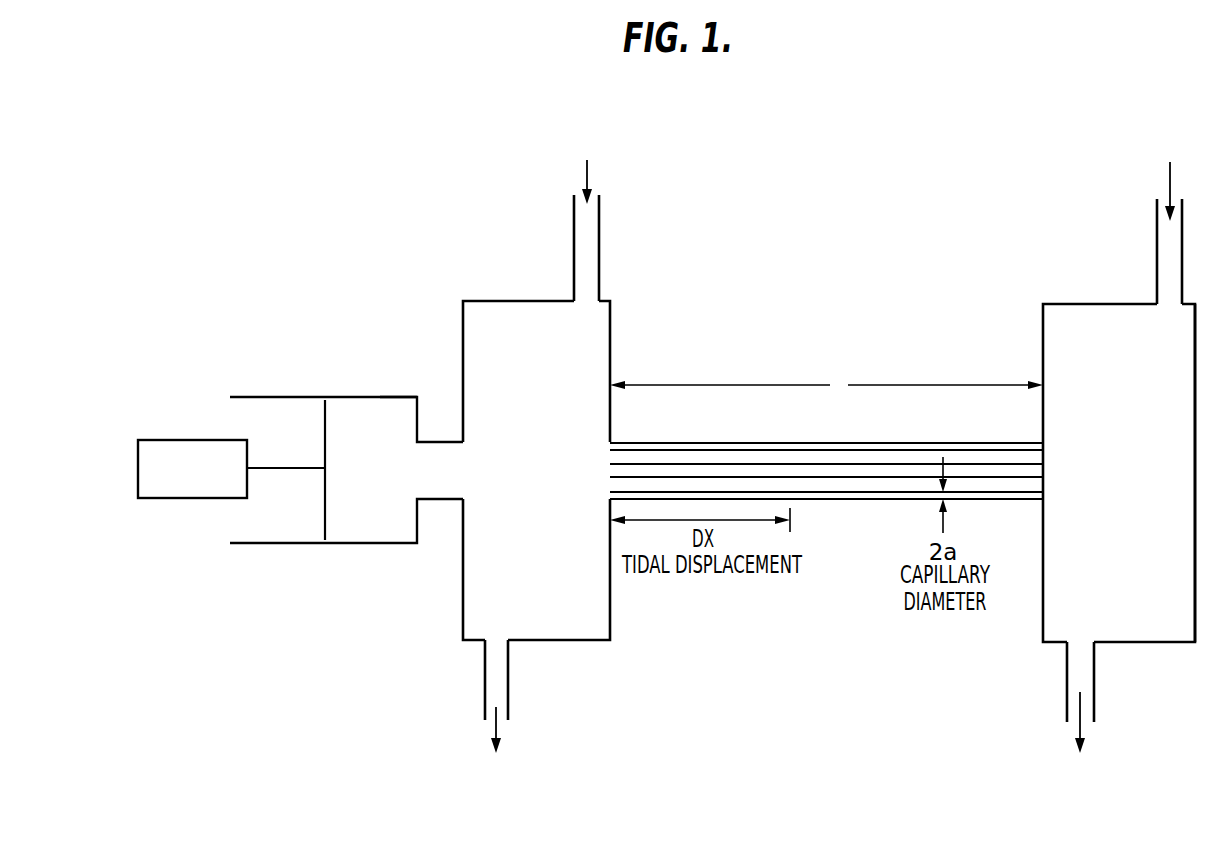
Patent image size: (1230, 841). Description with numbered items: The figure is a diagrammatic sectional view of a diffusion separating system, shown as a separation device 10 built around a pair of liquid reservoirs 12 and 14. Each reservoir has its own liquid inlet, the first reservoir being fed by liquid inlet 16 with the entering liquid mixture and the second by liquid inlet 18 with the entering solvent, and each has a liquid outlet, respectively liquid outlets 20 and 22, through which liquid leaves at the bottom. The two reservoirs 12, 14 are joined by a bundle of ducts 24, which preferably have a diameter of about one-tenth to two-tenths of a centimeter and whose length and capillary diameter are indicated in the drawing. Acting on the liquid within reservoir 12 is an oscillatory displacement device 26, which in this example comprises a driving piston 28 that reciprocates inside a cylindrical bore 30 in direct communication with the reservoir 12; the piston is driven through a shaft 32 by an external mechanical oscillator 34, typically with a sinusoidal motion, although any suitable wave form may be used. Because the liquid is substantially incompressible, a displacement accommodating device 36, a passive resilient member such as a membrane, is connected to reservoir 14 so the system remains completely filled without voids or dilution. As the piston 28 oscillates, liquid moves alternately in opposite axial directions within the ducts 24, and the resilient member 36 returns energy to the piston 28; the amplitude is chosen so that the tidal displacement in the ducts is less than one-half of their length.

The separation device 10 is at (815, 357).
The liquid reservoir 12 is at (512, 320).
The liquid reservoir 14 is at (1078, 326).
The liquid inlet 16 is at (600, 245).
The liquid inlet 18 is at (1183, 243).
The liquid outlet 20 is at (485, 688).
The liquid outlet 22 is at (1067, 688).
The ducts 24 is at (929, 449).
The oscillatory displacement device 26 is at (356, 560).
The driving piston 28 is at (316, 421).
The cylindrical bore 30 is at (380, 402).
The shaft 32 is at (297, 472).
The external mechanical oscillator 34 is at (178, 500).
The displacement accommodating device 36 is at (1197, 384).